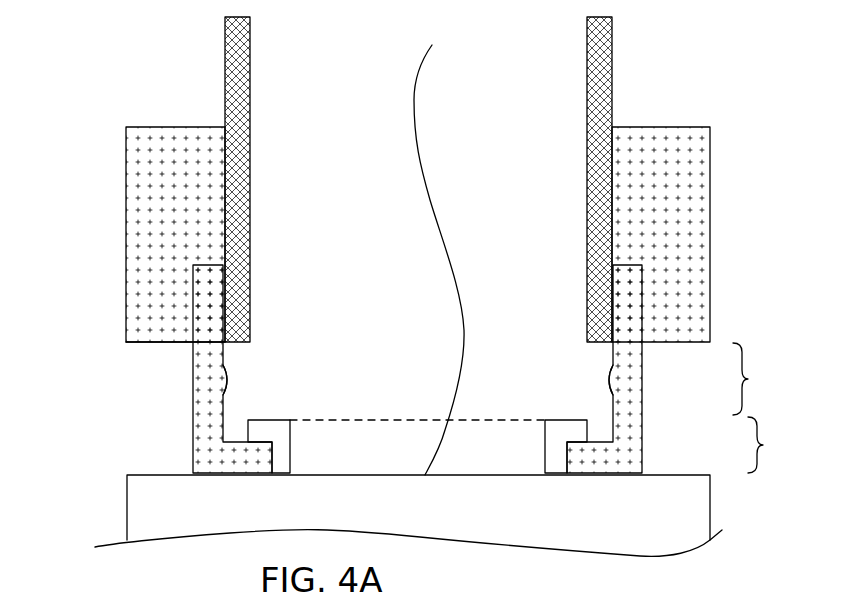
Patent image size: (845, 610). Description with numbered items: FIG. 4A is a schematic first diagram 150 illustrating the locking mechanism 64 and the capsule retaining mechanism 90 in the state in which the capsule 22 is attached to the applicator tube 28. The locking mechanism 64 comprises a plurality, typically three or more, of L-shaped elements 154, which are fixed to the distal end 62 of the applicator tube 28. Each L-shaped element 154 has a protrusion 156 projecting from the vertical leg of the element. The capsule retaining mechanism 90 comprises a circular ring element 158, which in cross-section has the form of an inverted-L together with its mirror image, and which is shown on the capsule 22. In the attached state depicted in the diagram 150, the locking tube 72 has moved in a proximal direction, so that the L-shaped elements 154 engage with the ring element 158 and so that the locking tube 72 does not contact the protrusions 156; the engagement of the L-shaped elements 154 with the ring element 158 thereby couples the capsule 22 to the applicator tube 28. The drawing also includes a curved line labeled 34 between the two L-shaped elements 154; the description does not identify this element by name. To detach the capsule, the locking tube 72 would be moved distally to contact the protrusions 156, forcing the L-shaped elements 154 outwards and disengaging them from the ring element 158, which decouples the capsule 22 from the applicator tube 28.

The first diagram 150 is at (83, 95).
The locking tube 72 is at (225, 43).
The applicator tube 28 is at (126, 268).
The distal end 62 is at (126, 341).
The L-shaped element 154 is at (193, 425).
The protrusion 156 is at (229, 380).
The ring element 158 is at (292, 436).
The locking mechanism 64 is at (755, 379).
The capsule retaining mechanism 90 is at (543, 445).
The capsule 22 is at (712, 505).
The encapsulant / lens 34 is at (416, 93).